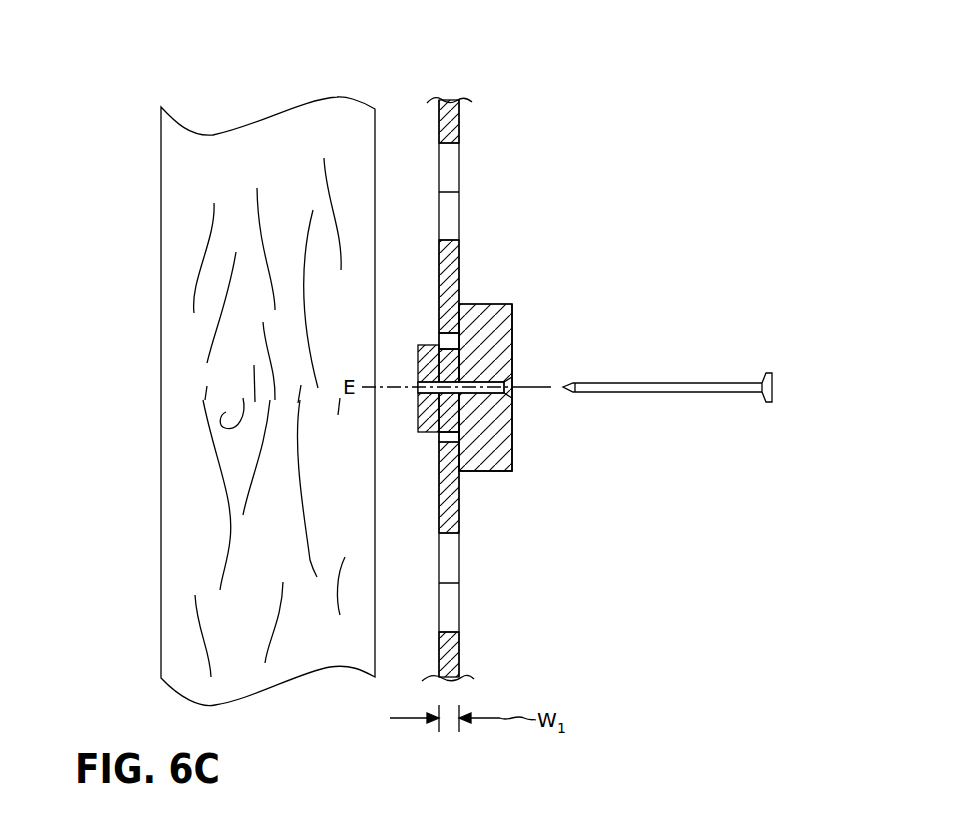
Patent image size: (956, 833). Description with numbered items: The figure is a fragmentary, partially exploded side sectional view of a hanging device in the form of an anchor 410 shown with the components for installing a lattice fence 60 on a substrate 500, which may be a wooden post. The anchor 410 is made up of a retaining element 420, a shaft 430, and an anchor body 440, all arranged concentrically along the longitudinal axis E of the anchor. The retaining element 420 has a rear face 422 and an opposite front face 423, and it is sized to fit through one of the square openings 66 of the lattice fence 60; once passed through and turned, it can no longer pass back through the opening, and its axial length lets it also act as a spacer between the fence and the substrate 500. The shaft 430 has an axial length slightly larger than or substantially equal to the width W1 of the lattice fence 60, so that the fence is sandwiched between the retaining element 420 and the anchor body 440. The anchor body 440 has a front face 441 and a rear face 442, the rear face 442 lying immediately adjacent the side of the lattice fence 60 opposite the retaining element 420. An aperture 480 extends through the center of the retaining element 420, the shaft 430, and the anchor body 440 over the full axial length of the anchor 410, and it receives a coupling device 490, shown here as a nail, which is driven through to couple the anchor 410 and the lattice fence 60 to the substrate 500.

The substrate 500 is at (188, 177).
The lattice fence 60 is at (461, 117).
The square openings 66 is at (451, 163).
The anchor 410 is at (517, 272).
The retaining element 420 is at (418, 433).
The rear face 422 is at (418, 356).
The front face 423 is at (440, 408).
The shaft 430 is at (450, 308).
The anchor body 440 is at (513, 304).
The front face 441 is at (512, 430).
The rear face 442 is at (446, 349).
The aperture 480 is at (498, 383).
The coupling device 490 is at (695, 393).